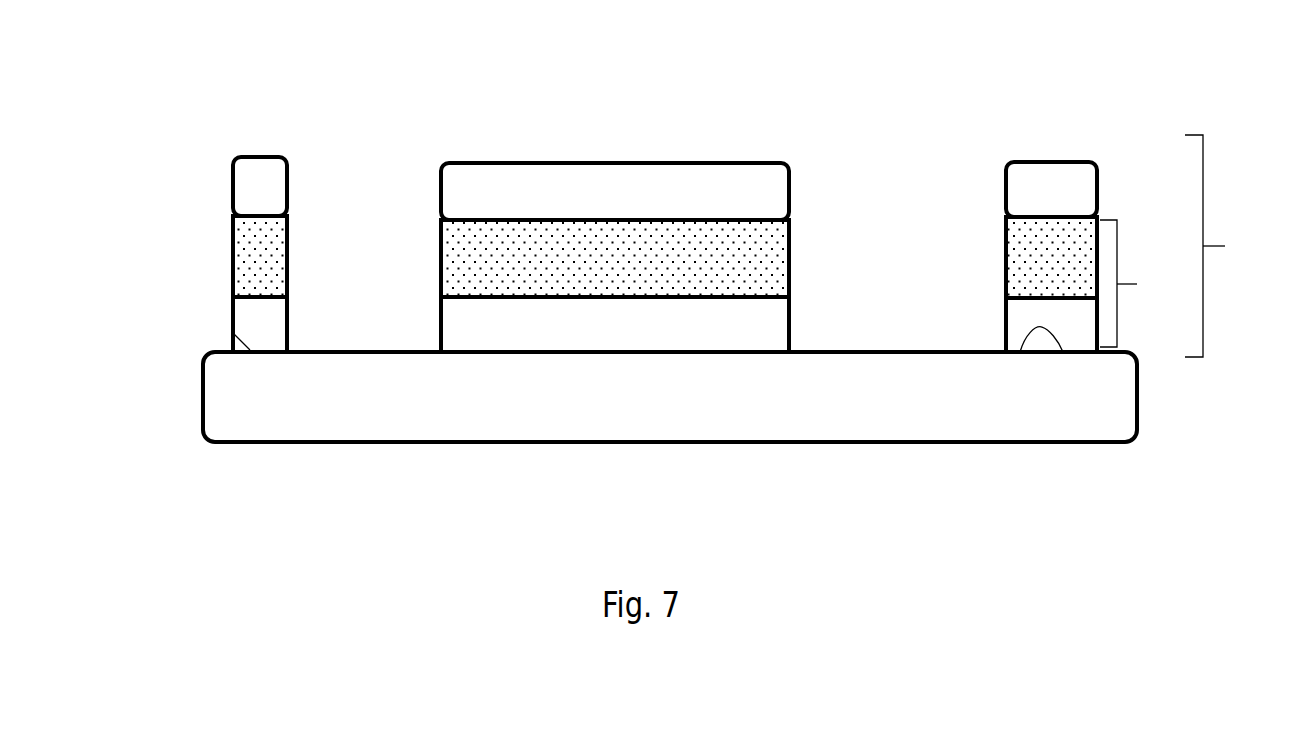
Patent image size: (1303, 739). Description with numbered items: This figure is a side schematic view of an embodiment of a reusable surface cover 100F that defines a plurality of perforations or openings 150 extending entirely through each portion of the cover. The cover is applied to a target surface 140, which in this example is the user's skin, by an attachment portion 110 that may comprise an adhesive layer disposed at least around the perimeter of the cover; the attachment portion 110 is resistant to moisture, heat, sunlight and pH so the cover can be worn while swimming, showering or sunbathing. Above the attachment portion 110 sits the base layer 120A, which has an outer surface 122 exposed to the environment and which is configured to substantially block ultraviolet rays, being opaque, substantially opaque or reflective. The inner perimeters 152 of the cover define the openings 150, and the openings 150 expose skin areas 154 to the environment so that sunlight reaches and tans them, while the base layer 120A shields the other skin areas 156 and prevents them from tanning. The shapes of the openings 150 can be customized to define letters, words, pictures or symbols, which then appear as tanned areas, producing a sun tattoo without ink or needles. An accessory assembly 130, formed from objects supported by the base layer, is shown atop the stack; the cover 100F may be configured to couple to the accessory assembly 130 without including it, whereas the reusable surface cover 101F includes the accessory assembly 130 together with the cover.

The attachment portion 110 is at (229, 305).
The base layer 120A is at (229, 238).
The outer surface 122 is at (665, 218).
The accessory assembly 130 is at (229, 170).
The target surface 140 is at (198, 395).
The openings 150 is at (330, 178).
The inner perimeters 152 is at (288, 335).
The skin areas 154 is at (415, 352).
The shielded skin areas 156 is at (231, 331).
The reusable surface cover 100F is at (1143, 283).
The reusable surface cover with accessory assembly 101F is at (1232, 246).